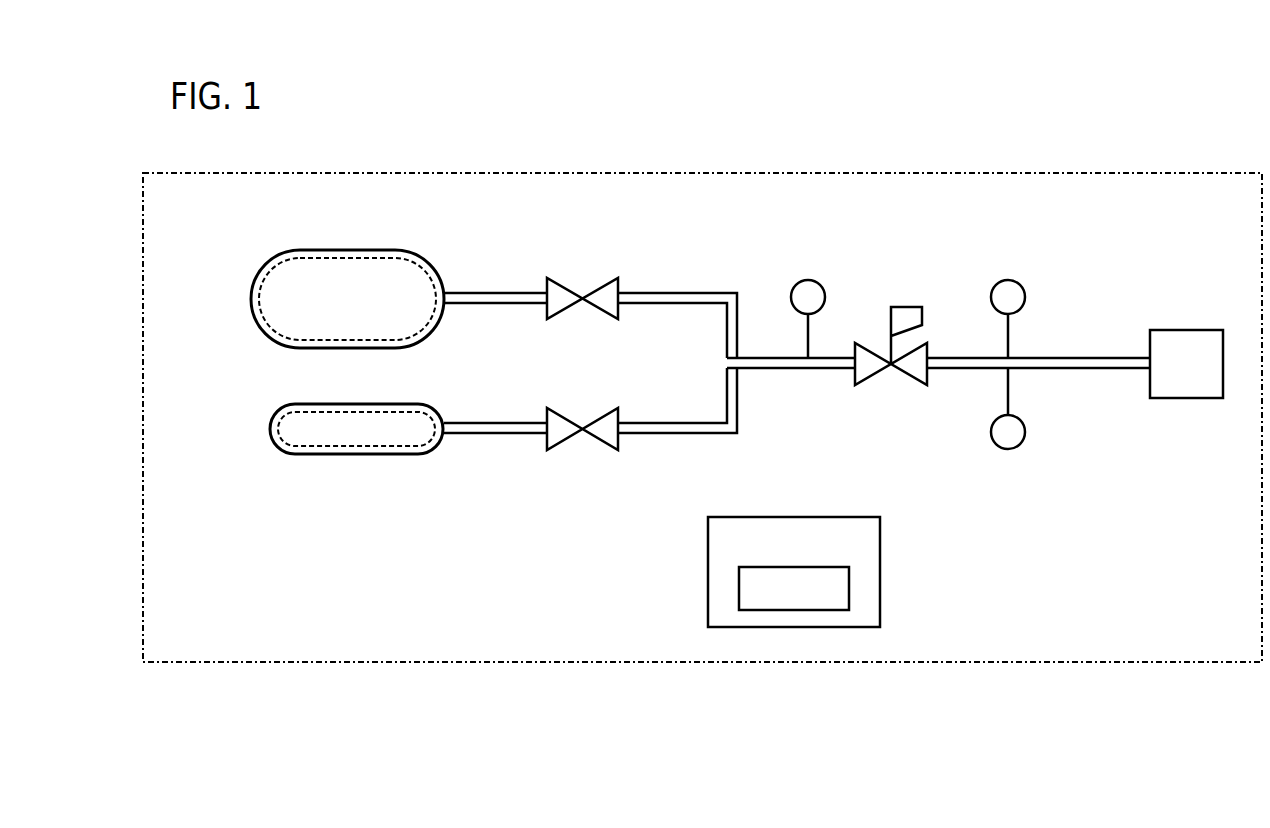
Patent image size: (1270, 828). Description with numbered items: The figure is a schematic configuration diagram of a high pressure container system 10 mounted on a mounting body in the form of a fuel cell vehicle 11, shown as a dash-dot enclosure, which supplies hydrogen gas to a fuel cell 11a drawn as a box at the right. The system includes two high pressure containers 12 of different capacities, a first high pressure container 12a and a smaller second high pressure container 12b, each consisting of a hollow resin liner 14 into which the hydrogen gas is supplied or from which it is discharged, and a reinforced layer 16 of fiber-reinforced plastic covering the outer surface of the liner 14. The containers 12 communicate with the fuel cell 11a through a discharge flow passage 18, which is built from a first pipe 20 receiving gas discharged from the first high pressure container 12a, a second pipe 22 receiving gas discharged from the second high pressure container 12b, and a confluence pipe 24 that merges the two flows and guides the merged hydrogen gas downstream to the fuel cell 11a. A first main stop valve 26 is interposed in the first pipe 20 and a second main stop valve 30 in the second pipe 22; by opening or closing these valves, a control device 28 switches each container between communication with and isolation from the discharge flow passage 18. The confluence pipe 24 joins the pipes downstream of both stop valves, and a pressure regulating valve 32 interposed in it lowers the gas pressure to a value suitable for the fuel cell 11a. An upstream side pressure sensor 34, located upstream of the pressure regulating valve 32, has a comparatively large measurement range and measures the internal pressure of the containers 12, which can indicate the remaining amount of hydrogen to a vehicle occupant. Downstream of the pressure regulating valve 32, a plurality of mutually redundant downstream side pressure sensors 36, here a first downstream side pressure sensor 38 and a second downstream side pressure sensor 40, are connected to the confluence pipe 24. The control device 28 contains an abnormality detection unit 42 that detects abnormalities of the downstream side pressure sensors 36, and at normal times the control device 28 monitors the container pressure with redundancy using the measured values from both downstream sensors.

The high pressure container system 10 is at (1139, 217).
The fuel cell vehicle 11 is at (1167, 173).
The fuel cell 11a is at (1186, 330).
The high pressure container 12 is at (298, 359).
The first high pressure container 12a is at (262, 276).
The second high pressure container 12b is at (272, 427).
The liner 14 is at (325, 259).
The reinforced layer 16 is at (286, 251).
The discharge flow passage 18 is at (1081, 356).
The first pipe 20 is at (487, 291).
The second pipe 22 is at (487, 421).
The confluence pipe 24 is at (774, 371).
The first main stop valve 26 is at (606, 279).
The control device 28 is at (880, 536).
The second main stop valve 30 is at (606, 409).
The pressure regulating valve 32 is at (878, 378).
The upstream side pressure sensor 34 is at (805, 281).
The downstream side pressure sensors 36 is at (980, 367).
The first downstream side pressure sensor 38 is at (1004, 281).
The second downstream side pressure sensor 40 is at (1005, 450).
The abnormality detection unit 42 is at (849, 588).